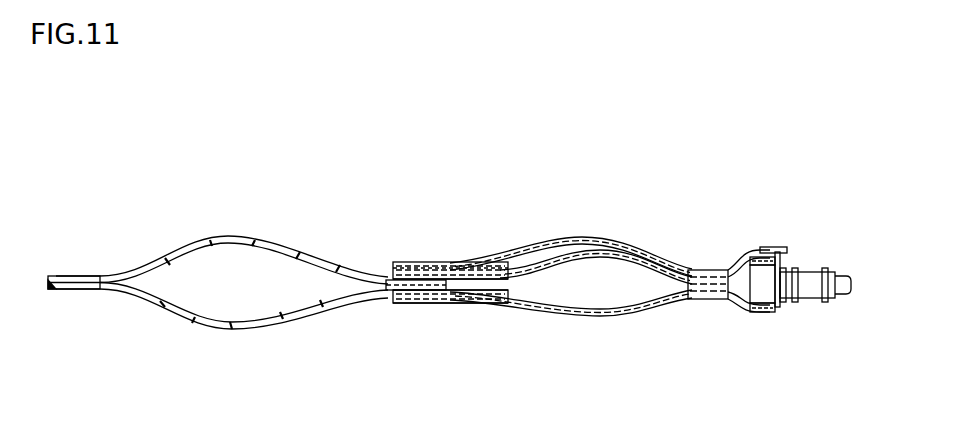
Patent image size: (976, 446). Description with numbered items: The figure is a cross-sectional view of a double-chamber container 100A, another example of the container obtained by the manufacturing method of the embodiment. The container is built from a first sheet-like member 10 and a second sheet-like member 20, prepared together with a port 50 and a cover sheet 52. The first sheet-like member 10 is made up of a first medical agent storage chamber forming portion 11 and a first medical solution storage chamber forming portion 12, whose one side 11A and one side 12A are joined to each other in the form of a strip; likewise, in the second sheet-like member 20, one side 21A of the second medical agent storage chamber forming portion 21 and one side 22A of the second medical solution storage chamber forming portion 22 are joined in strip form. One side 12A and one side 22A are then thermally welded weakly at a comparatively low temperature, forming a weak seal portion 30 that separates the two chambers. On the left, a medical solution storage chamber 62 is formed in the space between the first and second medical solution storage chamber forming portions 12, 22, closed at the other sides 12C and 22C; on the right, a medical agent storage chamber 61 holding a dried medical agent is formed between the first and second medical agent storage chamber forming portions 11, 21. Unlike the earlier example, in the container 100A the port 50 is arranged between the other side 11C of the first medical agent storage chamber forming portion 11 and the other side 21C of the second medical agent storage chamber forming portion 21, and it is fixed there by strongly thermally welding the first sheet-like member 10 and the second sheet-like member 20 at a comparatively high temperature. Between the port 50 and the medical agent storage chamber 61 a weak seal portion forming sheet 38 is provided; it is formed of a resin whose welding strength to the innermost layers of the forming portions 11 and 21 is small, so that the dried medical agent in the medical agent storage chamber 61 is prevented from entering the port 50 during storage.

The double-chamber container 100A is at (147, 133).
The first sheet-like member 10 is at (575, 185).
The second sheet-like member 20 is at (575, 381).
The first medical agent storage chamber forming portion 11 is at (563, 245).
The first medical solution storage chamber forming portion 12 is at (224, 237).
The second medical agent storage chamber forming portion 21 is at (565, 317).
The second medical solution storage chamber forming portion 22 is at (228, 330).
The one side of first medical agent storage chamber forming portion 11A is at (422, 270).
The one side of first medical solution storage chamber forming portion 12A is at (392, 278).
The one side of second medical agent storage chamber forming portion 21A is at (440, 305).
The one side of second medical solution storage chamber forming portion 22A is at (402, 300).
The other side of first medical agent storage chamber forming portion 11C is at (758, 257).
The other side of first medical solution storage chamber forming portion 12C is at (72, 279).
The other side of second medical agent storage chamber forming portion 21C is at (758, 312).
The other side of second medical solution storage chamber forming portion 22C is at (70, 291).
The weak seal portion 30 is at (440, 278).
The weak seal portion forming sheet 38 is at (703, 287).
The port 50 is at (808, 283).
The cover sheet 52 is at (597, 240).
The medical agent storage chamber 61 is at (612, 284).
The medical solution storage chamber 62 is at (172, 278).